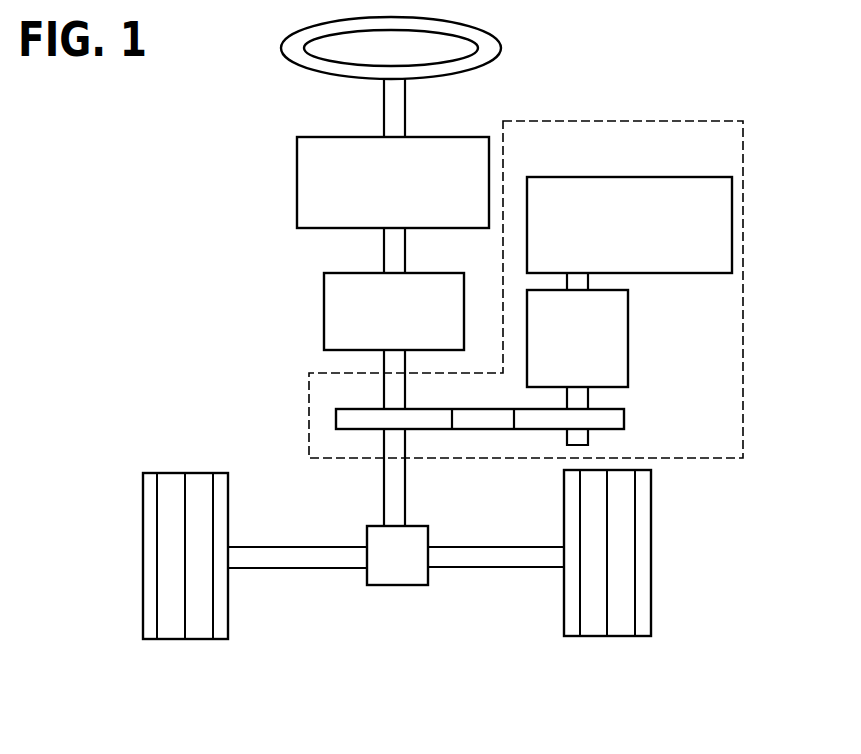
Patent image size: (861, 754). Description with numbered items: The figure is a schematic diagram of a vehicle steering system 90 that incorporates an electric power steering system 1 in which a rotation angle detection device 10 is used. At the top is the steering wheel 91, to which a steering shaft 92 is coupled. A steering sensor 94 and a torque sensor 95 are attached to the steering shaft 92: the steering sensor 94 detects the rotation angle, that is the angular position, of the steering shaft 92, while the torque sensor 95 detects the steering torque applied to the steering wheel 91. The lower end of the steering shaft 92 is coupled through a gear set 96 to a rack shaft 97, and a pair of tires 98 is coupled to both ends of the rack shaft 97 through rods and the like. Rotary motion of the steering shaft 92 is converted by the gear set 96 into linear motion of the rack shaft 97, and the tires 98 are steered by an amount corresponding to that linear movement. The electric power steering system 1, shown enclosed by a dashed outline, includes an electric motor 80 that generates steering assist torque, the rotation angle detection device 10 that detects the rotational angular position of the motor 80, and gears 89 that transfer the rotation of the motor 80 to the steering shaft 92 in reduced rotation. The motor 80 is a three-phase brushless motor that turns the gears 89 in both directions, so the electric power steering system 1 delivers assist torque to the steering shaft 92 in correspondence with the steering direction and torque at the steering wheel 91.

The electric power steering system 1 is at (745, 140).
The rotation angle detection device 10 is at (732, 204).
The electric motor 80 is at (628, 305).
The gears 89 is at (625, 416).
The steering system 90 is at (339, 679).
The steering wheel 91 is at (281, 52).
The steering shaft 92 is at (384, 108).
The steering sensor 94 is at (297, 162).
The torque sensor 95 is at (324, 291).
The gear set 96 is at (386, 586).
The rack shaft 97 is at (287, 569).
The tires 98 is at (200, 640).